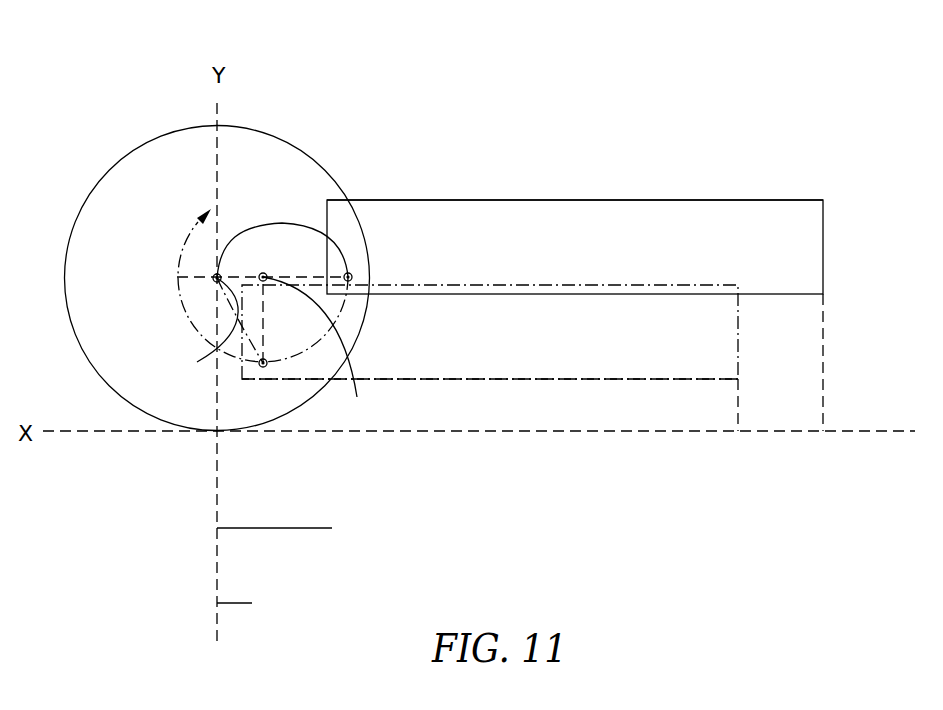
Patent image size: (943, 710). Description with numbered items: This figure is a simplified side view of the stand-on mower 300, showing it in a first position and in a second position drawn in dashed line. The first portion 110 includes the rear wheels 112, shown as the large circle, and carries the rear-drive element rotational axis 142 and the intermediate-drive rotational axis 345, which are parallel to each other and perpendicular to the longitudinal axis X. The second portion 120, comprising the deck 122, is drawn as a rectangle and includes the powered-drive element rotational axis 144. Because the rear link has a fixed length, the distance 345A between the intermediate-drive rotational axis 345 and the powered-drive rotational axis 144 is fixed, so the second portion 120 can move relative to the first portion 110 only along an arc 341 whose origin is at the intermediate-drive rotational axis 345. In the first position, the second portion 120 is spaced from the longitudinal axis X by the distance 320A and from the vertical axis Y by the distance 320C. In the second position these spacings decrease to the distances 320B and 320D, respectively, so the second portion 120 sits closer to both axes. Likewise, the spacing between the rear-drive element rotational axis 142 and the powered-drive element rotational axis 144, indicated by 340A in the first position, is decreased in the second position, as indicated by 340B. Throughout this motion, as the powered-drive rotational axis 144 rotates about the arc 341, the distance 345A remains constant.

The first portion 110 is at (155, 492).
The rear wheels 112 is at (113, 197).
The second portion 120 is at (570, 155).
The deck 122 is at (752, 217).
The rear-drive element rotational axis 142 is at (217, 278).
The powered-drive element rotational axis 144 is at (348, 277).
The stand-on mower 300 is at (713, 88).
The distance between second portion and longitudinal axis in first position 320A is at (823, 327).
The distance between second portion and longitudinal axis in second position 320B is at (738, 398).
The distance between second portion and vertical axis in first position 320C is at (299, 529).
The distance between second portion and vertical axis in second position 320D is at (260, 603).
The distance between rear-drive element rotational axis and powered-drive element ro 340A is at (291, 212).
The decreased distance between rear-drive element rotational axis and powered-drive 340B is at (209, 327).
The arc 341 is at (213, 347).
The intermediate-drive rotational axis 345 is at (322, 346).
The distance between intermediate-drive rotational axis and powered-drive rotational 345A is at (292, 277).